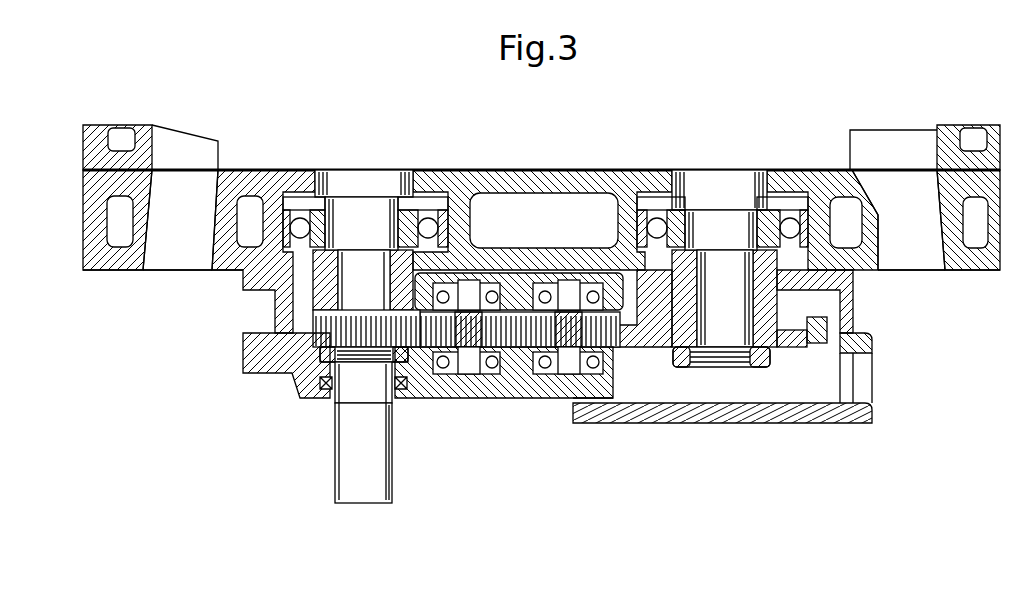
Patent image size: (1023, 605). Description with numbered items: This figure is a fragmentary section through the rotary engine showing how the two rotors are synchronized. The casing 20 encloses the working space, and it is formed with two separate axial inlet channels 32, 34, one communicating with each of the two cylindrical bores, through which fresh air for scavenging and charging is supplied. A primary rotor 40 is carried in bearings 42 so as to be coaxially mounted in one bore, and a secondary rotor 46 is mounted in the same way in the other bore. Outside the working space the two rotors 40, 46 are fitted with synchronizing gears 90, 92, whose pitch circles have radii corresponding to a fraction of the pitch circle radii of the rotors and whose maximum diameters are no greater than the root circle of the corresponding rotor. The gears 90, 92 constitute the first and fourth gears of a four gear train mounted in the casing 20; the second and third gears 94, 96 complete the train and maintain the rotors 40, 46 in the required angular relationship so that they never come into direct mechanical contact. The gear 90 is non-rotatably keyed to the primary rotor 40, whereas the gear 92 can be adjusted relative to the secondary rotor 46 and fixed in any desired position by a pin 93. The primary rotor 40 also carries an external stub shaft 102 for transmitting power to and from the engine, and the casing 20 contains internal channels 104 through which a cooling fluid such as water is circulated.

The casing 20 is at (84, 206).
The axial inlet channel 32 is at (162, 263).
The axial inlet channel 34 is at (912, 262).
The primary rotor 40 is at (335, 178).
The bearing 42 is at (450, 226).
The secondary rotor 46 is at (745, 178).
The synchronizing gear 90 is at (319, 303).
The synchronizing gear 92 is at (828, 328).
The pin 93 is at (662, 355).
The second gear of gear train 94 is at (462, 408).
The third gear of gear train 96 is at (616, 347).
The external stub shaft 102 is at (340, 457).
The internal channels 104 is at (557, 200).